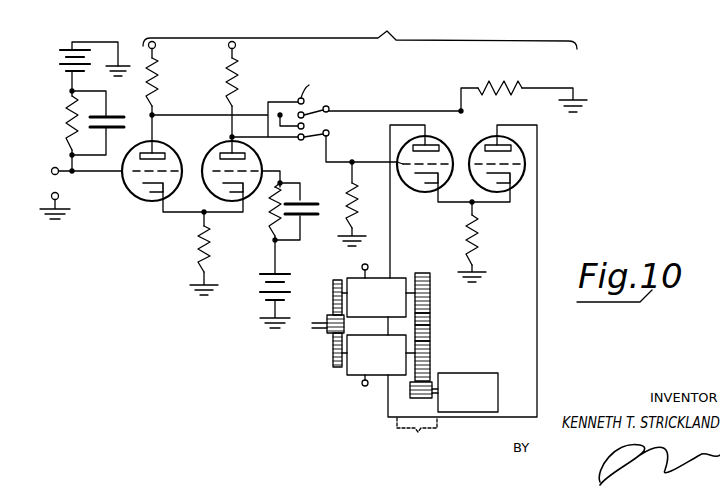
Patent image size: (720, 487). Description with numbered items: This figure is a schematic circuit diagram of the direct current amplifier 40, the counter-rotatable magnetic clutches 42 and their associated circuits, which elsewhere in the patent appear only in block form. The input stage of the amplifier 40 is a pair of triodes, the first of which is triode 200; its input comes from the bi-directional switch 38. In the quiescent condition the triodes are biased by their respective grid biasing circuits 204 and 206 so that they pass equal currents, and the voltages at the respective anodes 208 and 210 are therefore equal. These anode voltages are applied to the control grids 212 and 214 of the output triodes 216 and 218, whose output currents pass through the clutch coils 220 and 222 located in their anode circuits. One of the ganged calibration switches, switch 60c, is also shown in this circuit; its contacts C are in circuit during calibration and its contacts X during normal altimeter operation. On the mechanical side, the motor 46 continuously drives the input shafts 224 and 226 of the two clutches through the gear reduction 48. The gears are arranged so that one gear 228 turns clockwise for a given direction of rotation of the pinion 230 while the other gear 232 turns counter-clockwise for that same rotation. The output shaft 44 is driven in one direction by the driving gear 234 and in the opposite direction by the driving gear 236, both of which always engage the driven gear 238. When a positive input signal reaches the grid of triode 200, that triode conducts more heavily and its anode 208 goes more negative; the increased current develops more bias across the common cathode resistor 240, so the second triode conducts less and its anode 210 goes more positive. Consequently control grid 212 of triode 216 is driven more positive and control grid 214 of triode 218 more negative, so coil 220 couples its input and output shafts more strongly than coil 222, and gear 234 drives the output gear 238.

The amplifier 40 is at (360, 28).
The grid biasing circuit 204 is at (62, 97).
The bi-directional switch input 38 is at (52, 183).
The triode 200 is at (200, 108).
The anode 208 is at (183, 140).
The anode 210 is at (257, 157).
The common cathode resistor 240 is at (211, 243).
The ganged switch 60c is at (308, 111).
The grid biasing circuit 206 is at (340, 235).
The triode 216 is at (430, 143).
The control grid 212 is at (410, 183).
The triode 218 is at (508, 138).
The control grid 214 is at (515, 172).
The counter-rotatable magnetic clutches 42 is at (383, 334).
The clutch coil 220 is at (355, 276).
The clutch coil 222 is at (352, 377).
The driving gear 234 is at (333, 283).
The driven gear 238 is at (330, 320).
The output shaft 44 is at (315, 329).
The driving gear 236 is at (333, 360).
The input shaft 224 is at (412, 280).
The gear 228 is at (430, 293).
The input shaft 226 is at (430, 326).
The gear 232 is at (430, 350).
The pinion 230 is at (410, 393).
The motor 46 is at (472, 373).
The gear reduction 48 is at (406, 449).